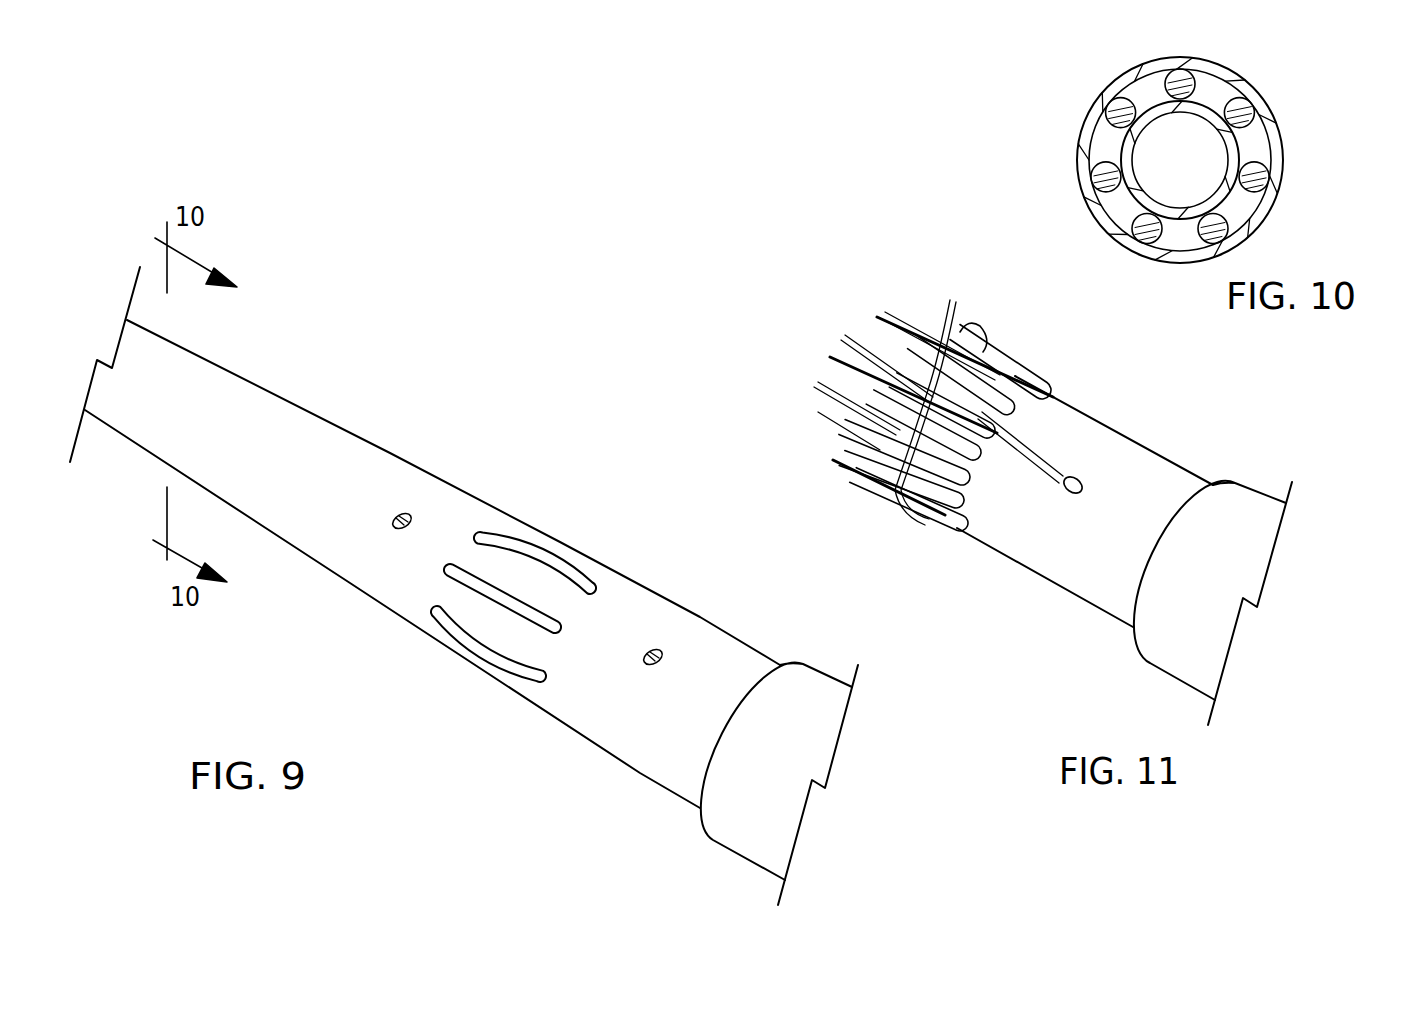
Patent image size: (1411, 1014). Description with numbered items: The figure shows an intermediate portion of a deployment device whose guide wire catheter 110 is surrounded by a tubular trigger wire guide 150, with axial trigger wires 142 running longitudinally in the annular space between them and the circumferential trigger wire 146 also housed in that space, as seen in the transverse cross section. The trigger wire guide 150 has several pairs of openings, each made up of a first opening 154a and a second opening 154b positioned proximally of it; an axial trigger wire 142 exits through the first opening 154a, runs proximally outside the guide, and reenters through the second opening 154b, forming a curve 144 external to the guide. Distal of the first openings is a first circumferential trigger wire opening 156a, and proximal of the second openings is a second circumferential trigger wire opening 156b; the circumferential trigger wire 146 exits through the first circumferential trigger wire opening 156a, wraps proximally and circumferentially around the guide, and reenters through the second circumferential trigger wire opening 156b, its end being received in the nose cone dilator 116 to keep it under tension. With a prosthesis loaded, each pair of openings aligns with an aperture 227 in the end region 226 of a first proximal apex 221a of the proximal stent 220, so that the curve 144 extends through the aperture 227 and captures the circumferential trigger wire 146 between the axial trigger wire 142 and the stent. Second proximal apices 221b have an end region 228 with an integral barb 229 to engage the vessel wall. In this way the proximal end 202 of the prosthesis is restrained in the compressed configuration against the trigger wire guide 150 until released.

In FIG. 10, the guide wire catheter 110 is at (1237, 73).
In FIG. 9, the nose cone dilator 116 is at (740, 830).
In FIG. 11, the nose cone dilator 116 is at (1170, 650).
In FIG. 10, the axial trigger wire 142 is at (1100, 207).
In FIG. 11, the axial trigger wire 142 is at (940, 315).
In FIG. 9, the curve 144 is at (543, 547).
In FIG. 11, the curve 144 is at (980, 347).
In FIG. 10, the circumferential trigger wire 146 is at (1170, 88).
In FIG. 11, the circumferential trigger wire 146 is at (870, 322).
In FIG. 9, the trigger wire guide 150 is at (307, 435).
In FIG. 10, the trigger wire guide 150 is at (1263, 227).
In FIG. 11, the trigger wire guide 150 is at (1122, 610).
In FIG. 9, the first opening 154a is at (480, 533).
In FIG. 9, the second opening 154b is at (593, 585).
In FIG. 9, the first circumferential trigger wire opening 156a is at (392, 527).
In FIG. 9, the second circumferential trigger wire opening 156b is at (660, 652).
In FIG. 11, the second circumferential trigger wire opening 156b is at (1085, 478).
In FIG. 11, the proximal end 202 is at (1003, 427).
In FIG. 11, the proximal stent 220 is at (950, 300).
In FIG. 11, the first proximal apex 221a is at (1040, 395).
In FIG. 11, the second proximal apex 221b is at (983, 466).
In FIG. 11, the end region 226 is at (1035, 380).
In FIG. 11, the aperture 227 is at (1015, 378).
In FIG. 11, the end region 228 is at (955, 447).
In FIG. 11, the barb 229 is at (843, 447).